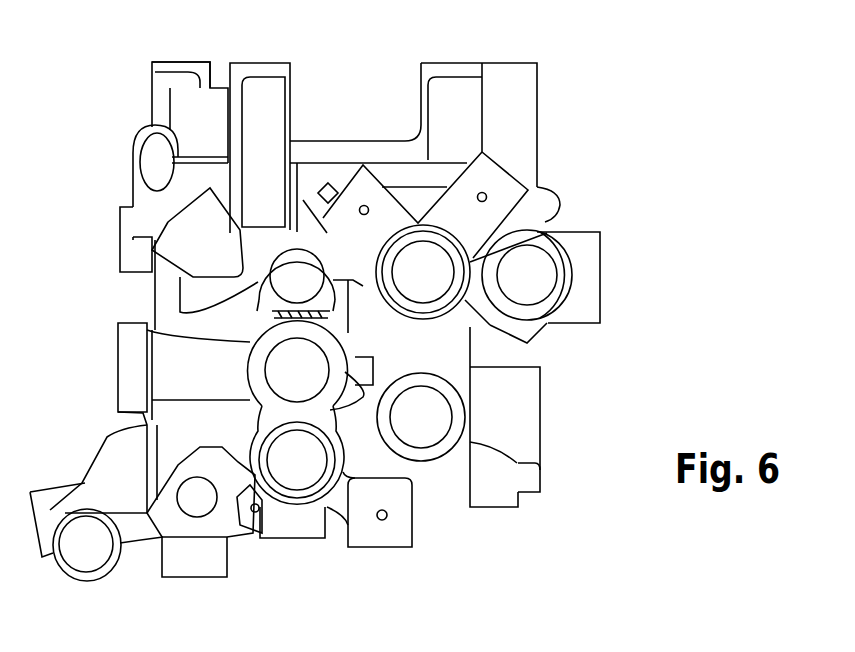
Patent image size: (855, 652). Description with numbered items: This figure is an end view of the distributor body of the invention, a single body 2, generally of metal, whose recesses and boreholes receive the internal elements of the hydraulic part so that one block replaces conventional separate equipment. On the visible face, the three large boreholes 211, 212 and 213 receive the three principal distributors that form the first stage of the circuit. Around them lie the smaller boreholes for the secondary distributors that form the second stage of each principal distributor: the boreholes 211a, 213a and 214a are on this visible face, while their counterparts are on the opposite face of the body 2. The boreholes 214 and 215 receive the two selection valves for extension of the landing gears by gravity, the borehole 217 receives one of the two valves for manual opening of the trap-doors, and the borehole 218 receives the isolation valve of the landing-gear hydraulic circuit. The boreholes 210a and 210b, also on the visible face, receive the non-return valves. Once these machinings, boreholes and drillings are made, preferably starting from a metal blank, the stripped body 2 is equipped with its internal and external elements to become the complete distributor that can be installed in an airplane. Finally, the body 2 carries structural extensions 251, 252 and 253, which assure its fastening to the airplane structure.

The body 2 is at (588, 524).
The borehole for non-return valve 210a is at (155, 160).
The borehole for non-return valve 210b is at (85, 548).
The borehole for principal distributor 211 is at (437, 280).
The borehole for secondary distributor 211a is at (486, 193).
The borehole for principal distributor 212 is at (283, 374).
The borehole for principal distributor 213 is at (297, 475).
The borehole for secondary distributor 213a is at (388, 515).
The borehole for selection valve 214 is at (295, 277).
The borehole for secondary distributor 214a is at (365, 205).
The borehole for selection valve 215 is at (527, 273).
The borehole for manual trap-door opening valve 217 is at (197, 507).
The borehole for isolation valve 218 is at (550, 395).
The structural extension 251 is at (500, 63).
The structural extension 252 is at (172, 63).
The structural extension 253 is at (252, 72).